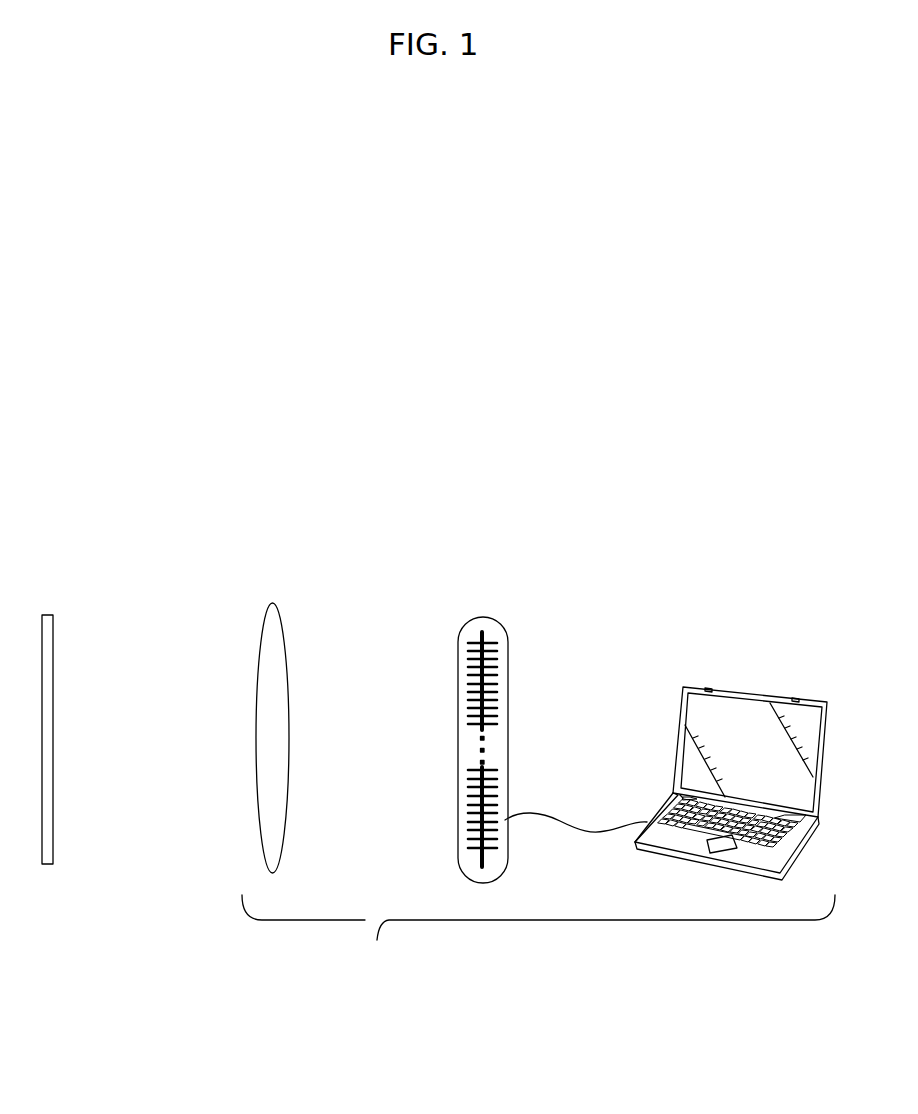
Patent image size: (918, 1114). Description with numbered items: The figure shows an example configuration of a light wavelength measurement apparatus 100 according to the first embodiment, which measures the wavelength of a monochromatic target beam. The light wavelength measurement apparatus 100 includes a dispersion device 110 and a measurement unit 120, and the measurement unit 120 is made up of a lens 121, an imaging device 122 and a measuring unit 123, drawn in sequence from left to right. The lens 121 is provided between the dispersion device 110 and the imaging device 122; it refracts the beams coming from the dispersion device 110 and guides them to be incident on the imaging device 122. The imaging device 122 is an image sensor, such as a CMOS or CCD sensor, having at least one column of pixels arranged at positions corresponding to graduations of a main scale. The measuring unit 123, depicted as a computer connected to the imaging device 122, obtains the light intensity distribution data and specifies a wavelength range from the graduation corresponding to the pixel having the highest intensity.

The light wavelength measurement apparatus 100 is at (247, 503).
The dispersion device 110 is at (45, 614).
The measurement unit 120 is at (365, 920).
The lens 121 is at (274, 603).
The imaging device 122 is at (484, 616).
The measuring unit 123 is at (741, 690).